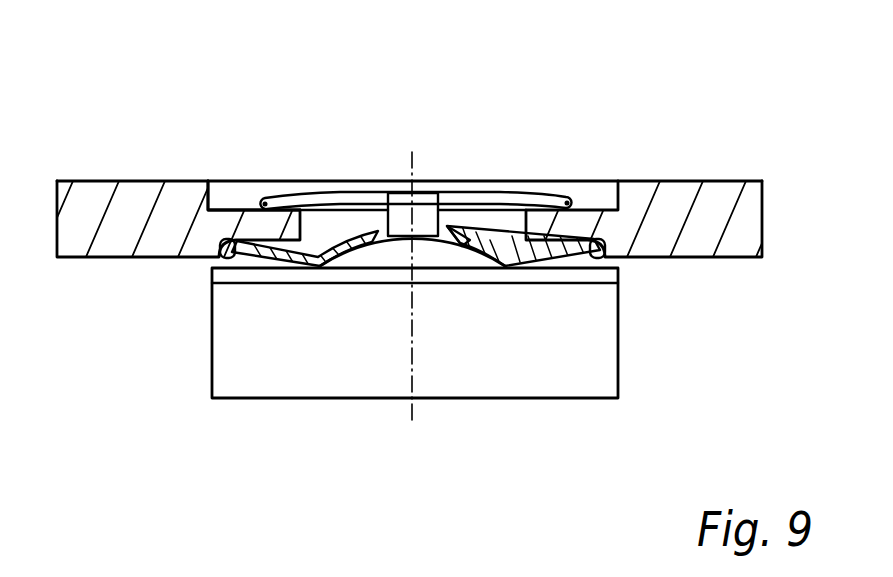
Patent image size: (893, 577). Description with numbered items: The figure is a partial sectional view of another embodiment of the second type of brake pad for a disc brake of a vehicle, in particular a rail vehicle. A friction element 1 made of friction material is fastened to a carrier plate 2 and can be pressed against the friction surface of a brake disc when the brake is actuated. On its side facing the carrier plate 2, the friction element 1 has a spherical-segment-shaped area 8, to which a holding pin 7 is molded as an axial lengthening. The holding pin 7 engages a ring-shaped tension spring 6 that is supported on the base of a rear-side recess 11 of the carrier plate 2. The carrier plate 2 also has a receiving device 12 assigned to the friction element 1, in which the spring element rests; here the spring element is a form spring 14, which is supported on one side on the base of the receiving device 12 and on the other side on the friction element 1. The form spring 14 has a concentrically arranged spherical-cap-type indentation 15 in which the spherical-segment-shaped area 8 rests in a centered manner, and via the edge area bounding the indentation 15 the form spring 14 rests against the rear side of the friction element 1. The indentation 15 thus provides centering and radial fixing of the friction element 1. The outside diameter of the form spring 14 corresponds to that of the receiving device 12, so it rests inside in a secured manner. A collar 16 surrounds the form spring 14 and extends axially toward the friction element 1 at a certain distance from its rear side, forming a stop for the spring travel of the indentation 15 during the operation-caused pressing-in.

The friction element 1 is at (602, 367).
The carrier plate 2 is at (666, 198).
The ring-shaped tension spring 6 is at (304, 194).
The holding pin 7 is at (399, 208).
The spherical-segment-shaped area 8 is at (447, 250).
The rear-side recess 11 is at (224, 200).
The receiving device 12 is at (508, 238).
The form spring 14 is at (447, 228).
The spherical-cap-type indentation 15 is at (353, 250).
The collar 16 is at (218, 260).